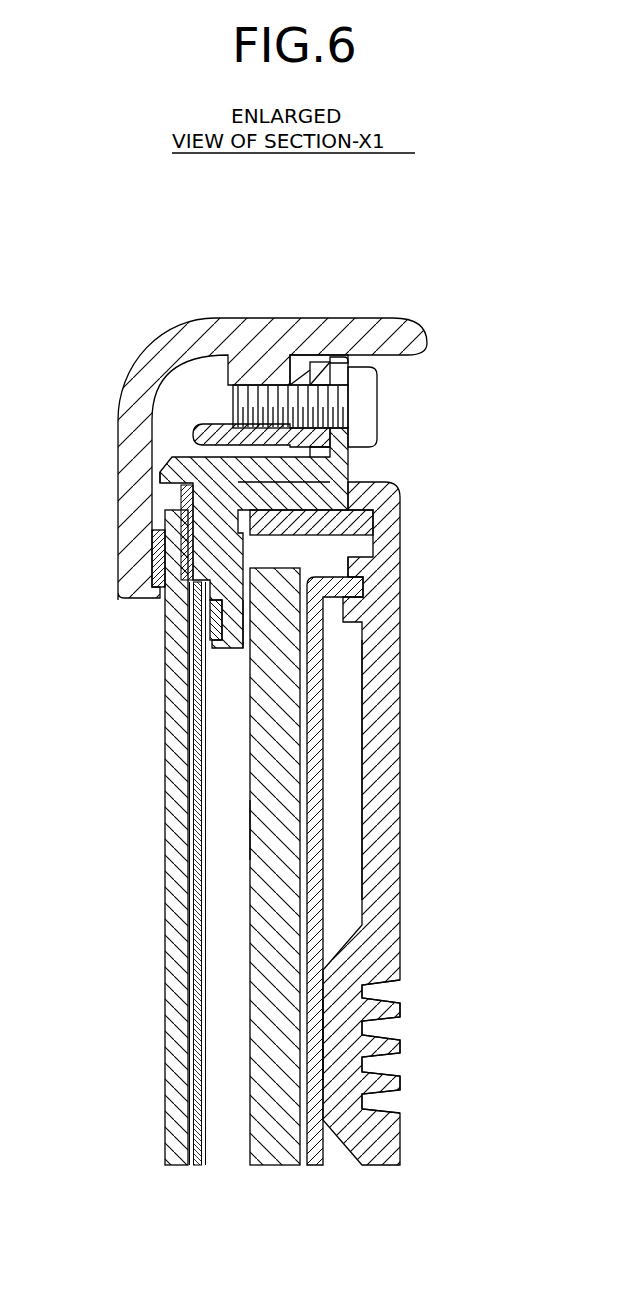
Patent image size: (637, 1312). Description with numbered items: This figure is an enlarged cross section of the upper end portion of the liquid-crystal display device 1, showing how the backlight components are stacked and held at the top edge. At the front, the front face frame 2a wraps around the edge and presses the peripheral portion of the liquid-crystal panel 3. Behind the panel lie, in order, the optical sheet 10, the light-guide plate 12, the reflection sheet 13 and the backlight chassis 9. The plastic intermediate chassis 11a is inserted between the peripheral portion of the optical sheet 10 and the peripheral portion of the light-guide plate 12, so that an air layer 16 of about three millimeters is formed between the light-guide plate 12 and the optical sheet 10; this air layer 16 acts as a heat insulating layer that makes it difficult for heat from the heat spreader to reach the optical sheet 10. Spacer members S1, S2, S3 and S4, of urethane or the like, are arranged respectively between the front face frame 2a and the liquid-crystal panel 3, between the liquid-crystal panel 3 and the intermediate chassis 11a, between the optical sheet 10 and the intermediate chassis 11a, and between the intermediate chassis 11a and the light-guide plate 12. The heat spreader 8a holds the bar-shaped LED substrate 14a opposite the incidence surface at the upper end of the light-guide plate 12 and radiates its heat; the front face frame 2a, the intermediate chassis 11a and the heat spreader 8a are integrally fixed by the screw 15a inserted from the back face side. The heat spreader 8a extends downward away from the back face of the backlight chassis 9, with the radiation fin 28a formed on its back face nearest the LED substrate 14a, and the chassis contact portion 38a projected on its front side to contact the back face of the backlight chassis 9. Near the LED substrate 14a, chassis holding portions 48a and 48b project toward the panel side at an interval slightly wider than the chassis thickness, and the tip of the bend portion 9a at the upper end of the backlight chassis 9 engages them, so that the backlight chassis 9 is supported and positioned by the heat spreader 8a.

The liquid-crystal display device 1 is at (307, 273).
The front face frame 2a is at (125, 393).
The liquid-crystal panel 3 is at (170, 725).
The heat spreader 8a is at (390, 748).
The backlight chassis 9 is at (326, 697).
The bend portion 9a is at (357, 586).
The optical sheet 10 is at (192, 688).
The intermediate chassis 11a is at (207, 508).
The light-guide plate 12 is at (258, 772).
The reflection sheet 13 is at (373, 553).
The LED substrate 14a is at (352, 518).
The screw 15a is at (370, 405).
The air layer 16 is at (220, 833).
The radiation fin 28a is at (400, 1045).
The chassis contact portion 38a is at (322, 1040).
The chassis holding portion 48a is at (355, 566).
The chassis holding portion 48b is at (347, 613).
The spacer member S1 is at (142, 565).
The spacer member S2 is at (178, 476).
The spacer member S3 is at (243, 632).
The spacer member S4 is at (240, 645).